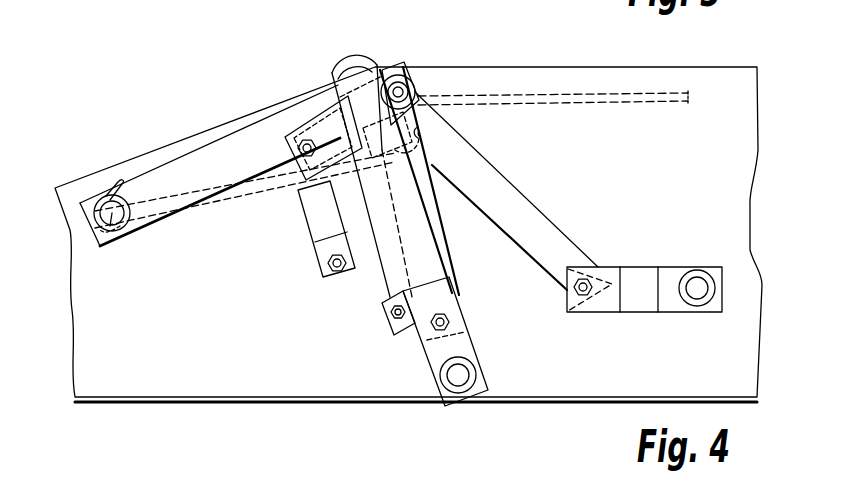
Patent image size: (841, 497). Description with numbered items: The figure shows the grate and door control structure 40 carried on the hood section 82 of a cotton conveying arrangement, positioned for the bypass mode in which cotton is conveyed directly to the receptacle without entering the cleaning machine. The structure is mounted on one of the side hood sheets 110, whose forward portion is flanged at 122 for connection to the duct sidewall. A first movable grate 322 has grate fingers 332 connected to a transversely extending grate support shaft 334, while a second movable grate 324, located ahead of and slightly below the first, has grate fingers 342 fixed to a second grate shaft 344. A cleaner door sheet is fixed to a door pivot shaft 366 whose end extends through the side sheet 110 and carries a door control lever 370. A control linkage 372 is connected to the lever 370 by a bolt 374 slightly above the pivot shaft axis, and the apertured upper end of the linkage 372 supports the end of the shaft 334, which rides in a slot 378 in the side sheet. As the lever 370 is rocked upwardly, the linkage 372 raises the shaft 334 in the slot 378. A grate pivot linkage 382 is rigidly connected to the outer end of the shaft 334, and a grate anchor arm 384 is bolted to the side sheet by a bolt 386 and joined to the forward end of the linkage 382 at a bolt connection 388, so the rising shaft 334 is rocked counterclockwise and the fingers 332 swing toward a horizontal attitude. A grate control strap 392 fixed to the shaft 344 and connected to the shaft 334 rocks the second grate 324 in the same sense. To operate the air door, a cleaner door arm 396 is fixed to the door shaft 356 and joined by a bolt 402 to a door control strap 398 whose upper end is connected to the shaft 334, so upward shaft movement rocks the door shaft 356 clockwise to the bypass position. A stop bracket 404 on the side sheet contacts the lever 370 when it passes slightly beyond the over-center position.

The grate and door control structure 40 is at (377, 30).
The hood section 82 is at (78, 152).
The side hood sheets 110 is at (150, 346).
The flanges 122 is at (235, 404).
The first movable grate 322 is at (533, 82).
The second movable grate 324 is at (197, 222).
The grate fingers 332 is at (578, 107).
The grate support shaft 334 is at (402, 64).
The grate fingers 342 is at (202, 212).
The second grate shaft 344 is at (106, 240).
The door shaft 356 is at (697, 286).
The door pivot shaft 366 is at (450, 372).
The door control lever 370 is at (380, 240).
The control linkage 372 is at (450, 262).
The bolt 374 is at (452, 325).
The slot 378 is at (420, 132).
The grate pivot linkage 382 is at (323, 127).
The grate anchor arm 384 is at (318, 230).
The bolt 386 is at (326, 286).
The bolt connection 388 is at (292, 133).
The grate control strap 392 is at (230, 152).
The cleaner door arm 396 is at (640, 303).
The door control strap 398 is at (530, 214).
The bolt 402 is at (584, 294).
The stop bracket 404 is at (396, 328).